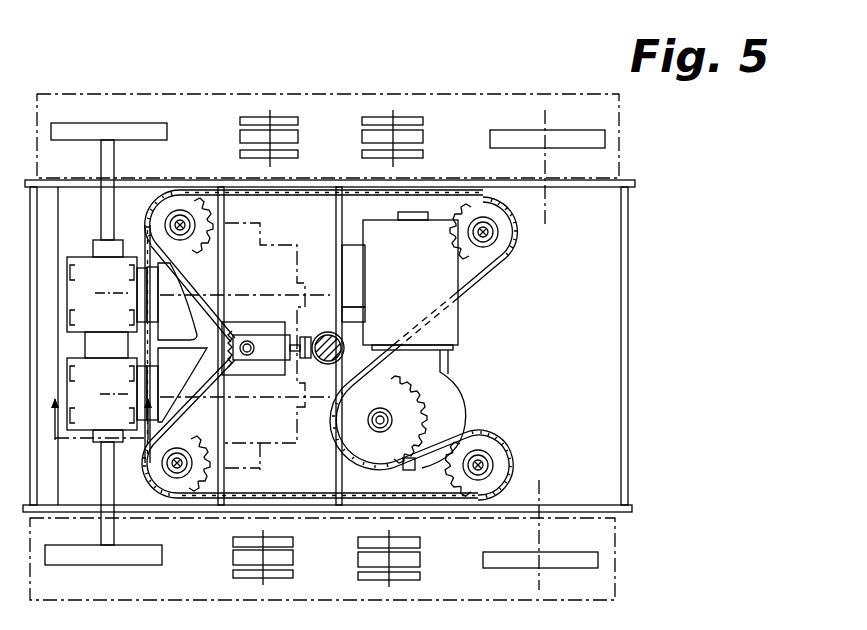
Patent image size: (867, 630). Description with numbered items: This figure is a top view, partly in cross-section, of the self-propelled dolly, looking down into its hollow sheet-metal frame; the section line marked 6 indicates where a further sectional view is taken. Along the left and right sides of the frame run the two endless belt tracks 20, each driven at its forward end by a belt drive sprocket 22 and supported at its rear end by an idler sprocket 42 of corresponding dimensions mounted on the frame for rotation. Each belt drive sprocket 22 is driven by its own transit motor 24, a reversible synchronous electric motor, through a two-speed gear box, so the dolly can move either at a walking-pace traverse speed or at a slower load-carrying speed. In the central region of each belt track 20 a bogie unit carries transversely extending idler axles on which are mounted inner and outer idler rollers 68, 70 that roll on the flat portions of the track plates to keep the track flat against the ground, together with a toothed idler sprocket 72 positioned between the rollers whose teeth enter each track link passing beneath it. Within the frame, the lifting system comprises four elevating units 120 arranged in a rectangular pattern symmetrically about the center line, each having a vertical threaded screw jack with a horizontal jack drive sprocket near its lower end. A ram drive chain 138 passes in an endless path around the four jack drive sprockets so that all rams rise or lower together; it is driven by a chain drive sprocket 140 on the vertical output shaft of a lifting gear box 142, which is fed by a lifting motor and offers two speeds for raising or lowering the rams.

The endless belt track 20 is at (447, 93).
The belt drive sprocket 22 is at (152, 123).
The transit motor 24 is at (185, 313).
The idler sprocket 42 is at (517, 130).
The inner idler roller 68 is at (362, 155).
The outer idler roller 70 is at (362, 120).
The toothed idler sprocket 72 is at (362, 138).
The elevating unit 120 is at (200, 157).
The ram drive chain 138 is at (468, 278).
The chain drive sprocket 140 is at (412, 395).
The lifting gear box 142 is at (457, 412).
The section line 6- 6 is at (100, 407).